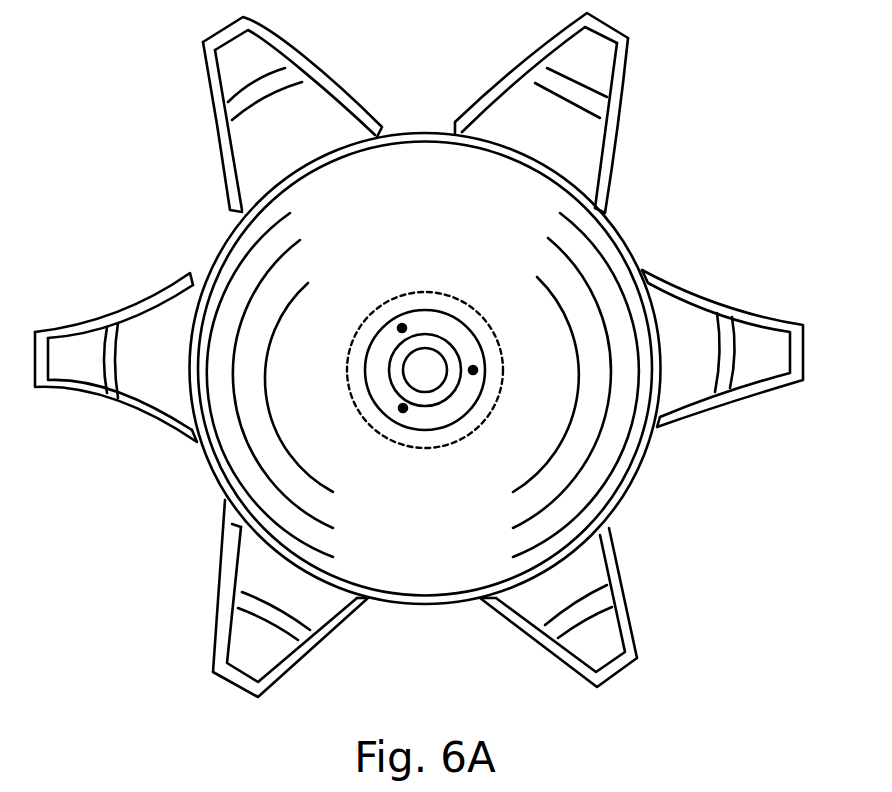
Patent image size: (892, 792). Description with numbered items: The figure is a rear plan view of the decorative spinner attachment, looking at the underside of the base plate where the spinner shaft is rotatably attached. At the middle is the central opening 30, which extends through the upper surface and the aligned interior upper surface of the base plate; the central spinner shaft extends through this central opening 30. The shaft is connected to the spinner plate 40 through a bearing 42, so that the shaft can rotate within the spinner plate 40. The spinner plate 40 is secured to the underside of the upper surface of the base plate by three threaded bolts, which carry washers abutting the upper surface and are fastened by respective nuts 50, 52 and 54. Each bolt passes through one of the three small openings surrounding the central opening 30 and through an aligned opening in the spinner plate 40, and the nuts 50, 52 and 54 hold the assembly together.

The central opening 30 is at (428, 371).
The spinner plate 40 is at (377, 335).
The bearing 42 is at (453, 395).
The nut 50 is at (403, 408).
The nut 52 is at (402, 328).
The nut 54 is at (473, 370).